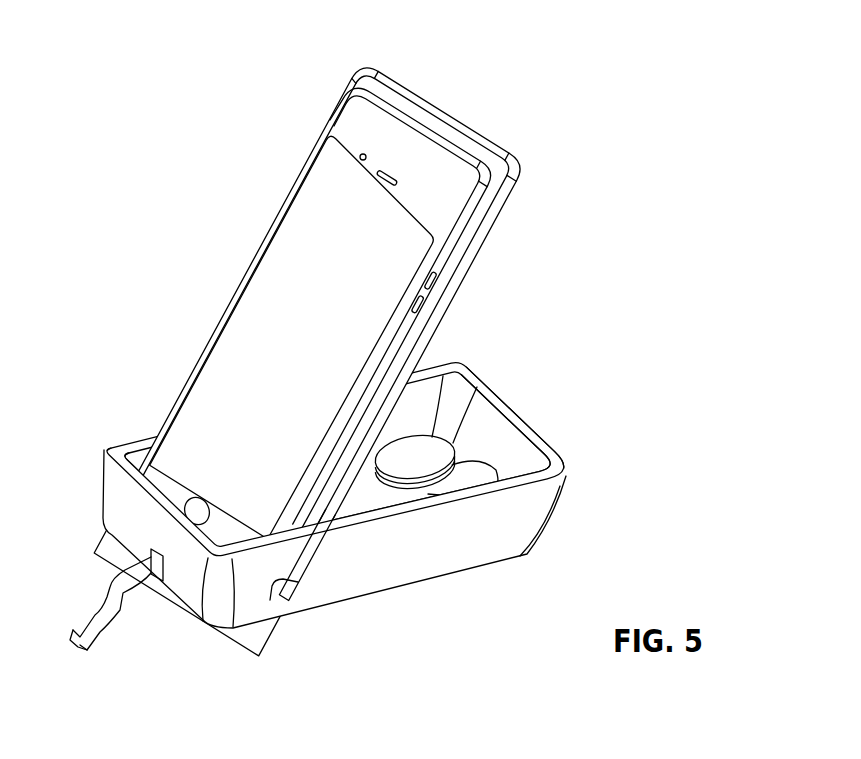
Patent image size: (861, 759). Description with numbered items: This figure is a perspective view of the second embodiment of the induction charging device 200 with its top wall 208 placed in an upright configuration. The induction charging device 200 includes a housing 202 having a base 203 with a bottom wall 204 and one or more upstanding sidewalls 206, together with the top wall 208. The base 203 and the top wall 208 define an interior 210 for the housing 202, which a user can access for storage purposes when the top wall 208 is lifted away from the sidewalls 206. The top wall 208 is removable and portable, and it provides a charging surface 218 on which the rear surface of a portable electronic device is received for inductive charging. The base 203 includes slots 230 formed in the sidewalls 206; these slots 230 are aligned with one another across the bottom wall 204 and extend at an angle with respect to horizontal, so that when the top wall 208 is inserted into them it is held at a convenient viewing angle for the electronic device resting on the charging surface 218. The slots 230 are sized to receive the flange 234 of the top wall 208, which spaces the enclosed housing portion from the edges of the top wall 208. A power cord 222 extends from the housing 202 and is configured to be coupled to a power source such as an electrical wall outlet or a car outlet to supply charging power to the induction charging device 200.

The induction charging device 200 is at (700, 88).
The housing 202 is at (360, 370).
The base 203 is at (393, 563).
The bottom wall 204 is at (473, 392).
The upstanding sidewalls 206 is at (520, 460).
The top wall 208 is at (465, 150).
The interior 210 is at (432, 392).
The charging surface 218 is at (325, 353).
The power cord 222 is at (123, 617).
The slots 230 is at (270, 600).
The flange 234 is at (321, 540).